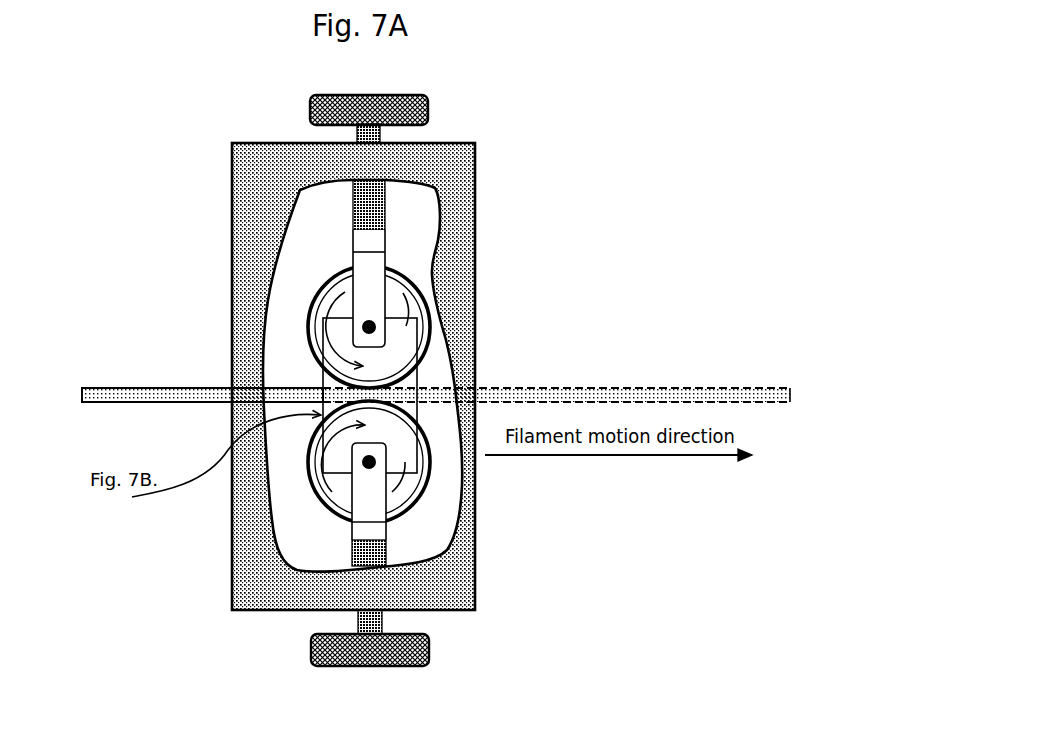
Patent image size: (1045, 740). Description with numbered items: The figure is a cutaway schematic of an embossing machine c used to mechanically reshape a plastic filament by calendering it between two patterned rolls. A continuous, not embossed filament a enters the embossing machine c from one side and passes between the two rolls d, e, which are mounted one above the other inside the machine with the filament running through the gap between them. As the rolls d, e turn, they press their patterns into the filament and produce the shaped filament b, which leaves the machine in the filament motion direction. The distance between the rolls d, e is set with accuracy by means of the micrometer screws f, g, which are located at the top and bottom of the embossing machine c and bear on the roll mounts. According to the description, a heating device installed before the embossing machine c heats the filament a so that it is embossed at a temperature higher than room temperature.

The continuous not embossed filament a is at (188, 380).
The shaped filament b is at (527, 378).
The embossing machine c is at (458, 181).
The roll d is at (336, 270).
The roll e is at (318, 506).
The micrometer screw f is at (298, 115).
The micrometer screw g is at (446, 653).